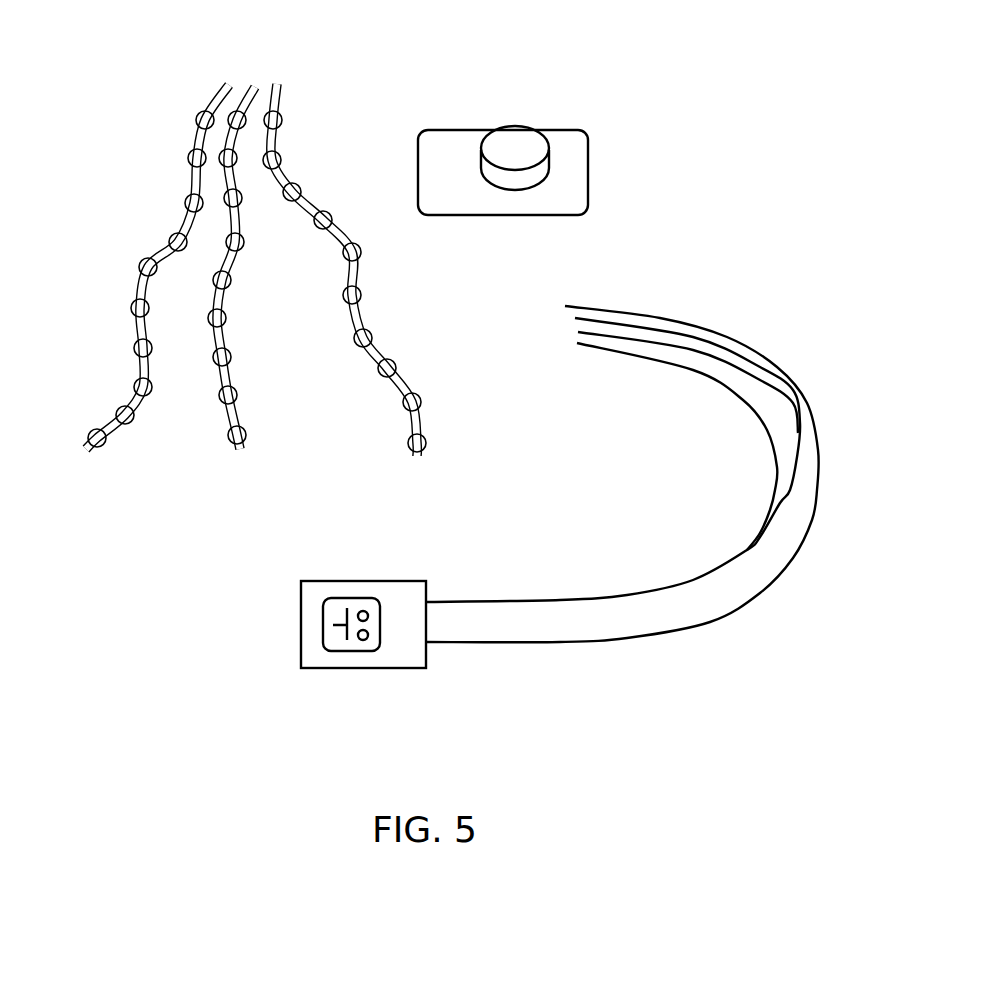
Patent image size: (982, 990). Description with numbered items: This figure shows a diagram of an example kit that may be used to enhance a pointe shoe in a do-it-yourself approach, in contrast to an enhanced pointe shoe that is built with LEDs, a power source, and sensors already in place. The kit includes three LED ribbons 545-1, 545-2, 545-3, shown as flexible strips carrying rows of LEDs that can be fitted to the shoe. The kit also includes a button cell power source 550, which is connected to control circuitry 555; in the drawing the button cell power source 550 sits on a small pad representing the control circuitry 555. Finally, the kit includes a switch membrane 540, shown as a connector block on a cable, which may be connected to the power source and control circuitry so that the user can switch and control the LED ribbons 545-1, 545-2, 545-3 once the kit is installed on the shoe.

The LED ribbon 545-1 is at (195, 180).
The LED ribbon 545-2 is at (233, 417).
The LED ribbon 545-3 is at (352, 320).
The button cell power source 550 is at (508, 137).
The control circuitry 555 is at (567, 187).
The switch membrane 540 is at (332, 662).